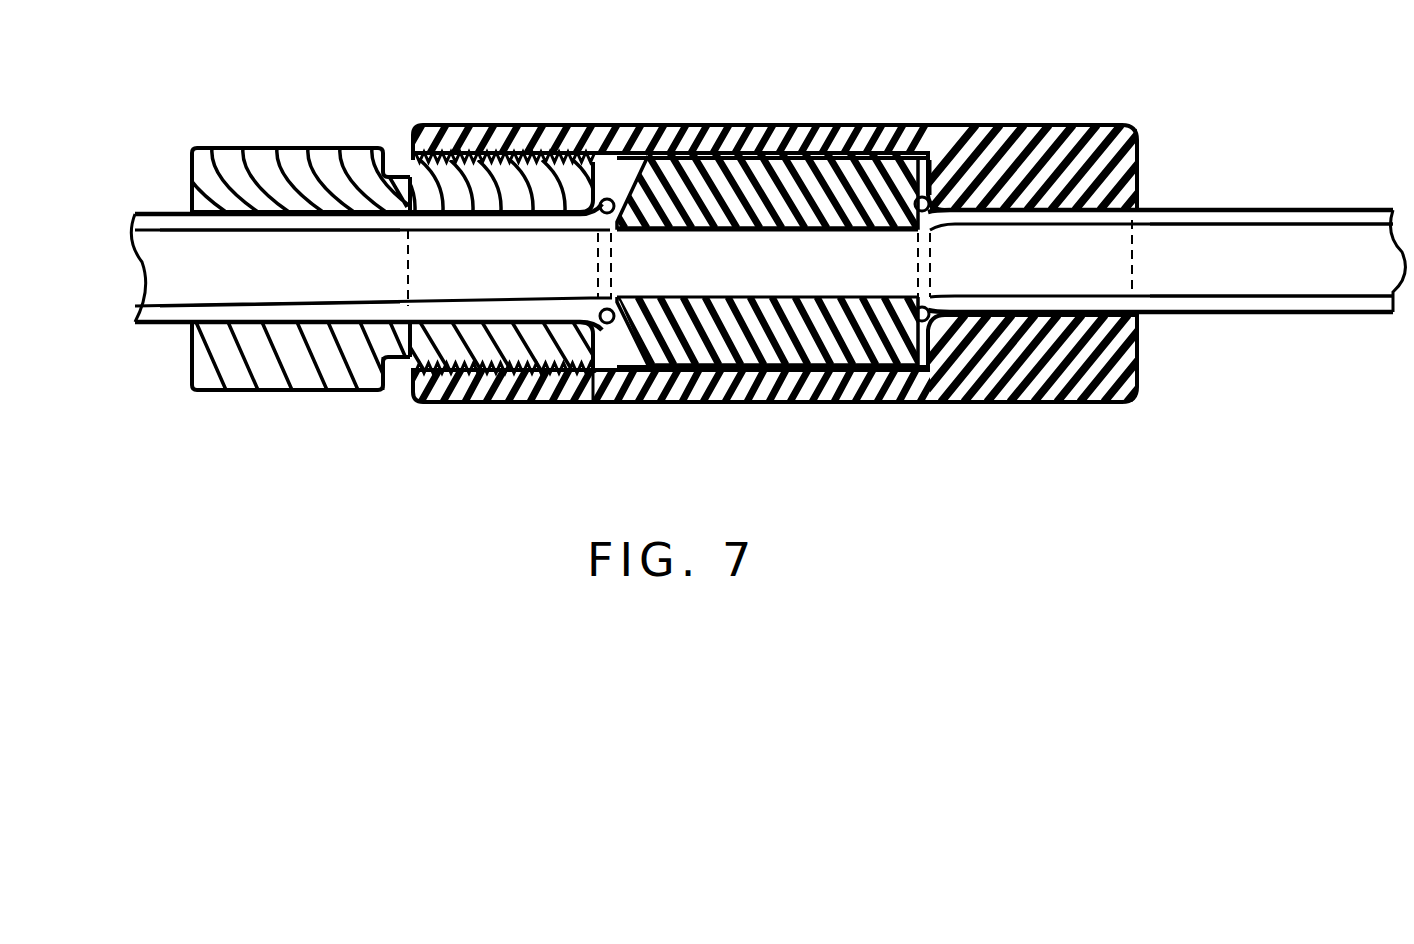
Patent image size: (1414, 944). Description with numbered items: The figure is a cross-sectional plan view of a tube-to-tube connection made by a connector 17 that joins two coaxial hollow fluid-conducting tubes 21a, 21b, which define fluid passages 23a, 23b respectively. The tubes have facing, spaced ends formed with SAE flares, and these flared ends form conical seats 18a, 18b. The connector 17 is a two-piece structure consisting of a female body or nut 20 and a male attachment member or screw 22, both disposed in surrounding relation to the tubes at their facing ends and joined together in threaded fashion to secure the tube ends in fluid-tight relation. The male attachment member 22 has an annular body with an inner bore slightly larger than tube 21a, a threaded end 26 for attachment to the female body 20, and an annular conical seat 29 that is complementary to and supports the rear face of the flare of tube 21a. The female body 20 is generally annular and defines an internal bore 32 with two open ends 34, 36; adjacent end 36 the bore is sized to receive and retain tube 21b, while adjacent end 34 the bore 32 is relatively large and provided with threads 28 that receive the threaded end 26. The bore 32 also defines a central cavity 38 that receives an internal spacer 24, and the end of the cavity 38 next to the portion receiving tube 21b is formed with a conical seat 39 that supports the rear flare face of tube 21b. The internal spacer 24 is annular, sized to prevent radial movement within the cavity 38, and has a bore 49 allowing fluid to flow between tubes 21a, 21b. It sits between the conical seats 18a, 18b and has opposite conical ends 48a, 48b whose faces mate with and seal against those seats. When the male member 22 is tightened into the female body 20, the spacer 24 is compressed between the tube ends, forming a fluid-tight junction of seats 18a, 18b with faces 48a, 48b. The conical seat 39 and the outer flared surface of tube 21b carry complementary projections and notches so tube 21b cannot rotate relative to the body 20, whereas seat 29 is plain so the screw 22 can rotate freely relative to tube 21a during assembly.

The connector 17 is at (774, 82).
The female body 20 is at (1137, 122).
The male attachment member 22 is at (210, 145).
The internal spacer 24 is at (812, 162).
The threaded end 26 is at (402, 378).
The threads 28 is at (472, 405).
The annular conical seat 29 is at (633, 125).
The internal bore 32 is at (652, 125).
The open end 34 is at (410, 177).
The open end 36 is at (1140, 200).
The central cavity 38 is at (597, 405).
The conical seat 39 is at (947, 162).
The conical end 48a is at (635, 400).
The conical end 48b is at (920, 165).
The conical seat 18a is at (618, 403).
The conical seat 18b is at (912, 400).
The tube 21a is at (137, 215).
The tube 21b is at (1257, 207).
The passage 23a is at (136, 266).
The passage 23b is at (1325, 267).
The bore 49 is at (808, 280).